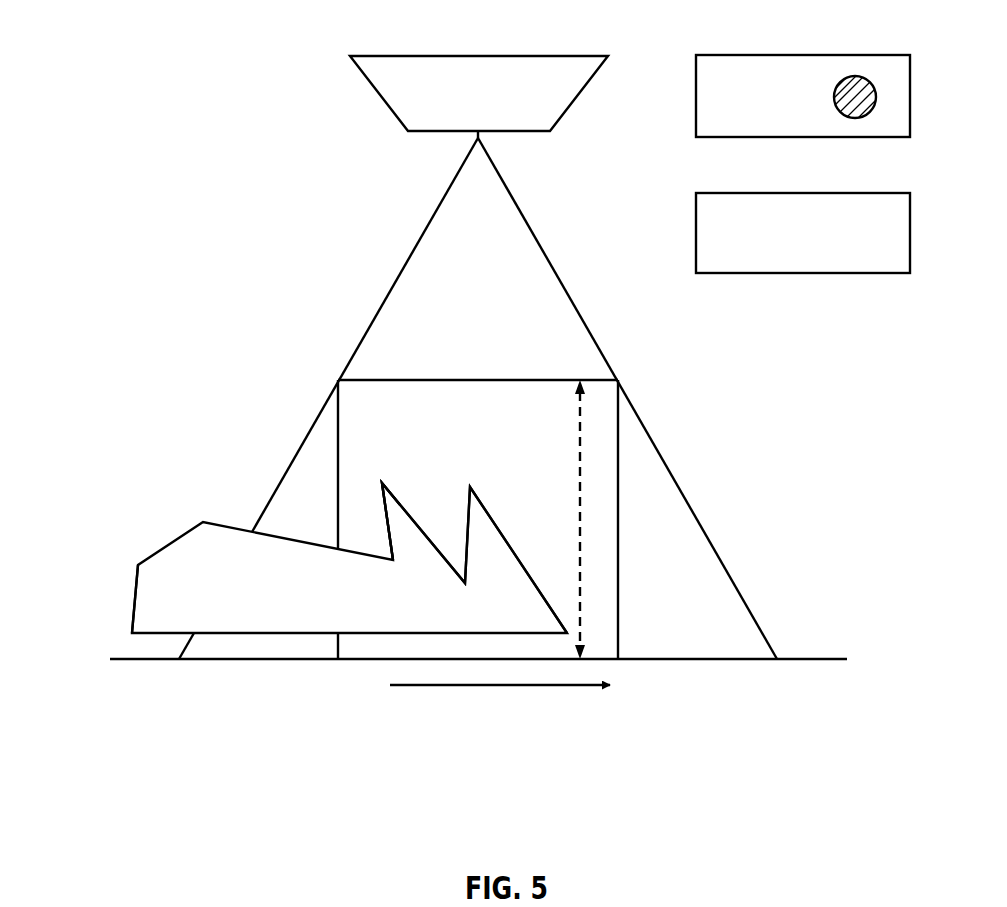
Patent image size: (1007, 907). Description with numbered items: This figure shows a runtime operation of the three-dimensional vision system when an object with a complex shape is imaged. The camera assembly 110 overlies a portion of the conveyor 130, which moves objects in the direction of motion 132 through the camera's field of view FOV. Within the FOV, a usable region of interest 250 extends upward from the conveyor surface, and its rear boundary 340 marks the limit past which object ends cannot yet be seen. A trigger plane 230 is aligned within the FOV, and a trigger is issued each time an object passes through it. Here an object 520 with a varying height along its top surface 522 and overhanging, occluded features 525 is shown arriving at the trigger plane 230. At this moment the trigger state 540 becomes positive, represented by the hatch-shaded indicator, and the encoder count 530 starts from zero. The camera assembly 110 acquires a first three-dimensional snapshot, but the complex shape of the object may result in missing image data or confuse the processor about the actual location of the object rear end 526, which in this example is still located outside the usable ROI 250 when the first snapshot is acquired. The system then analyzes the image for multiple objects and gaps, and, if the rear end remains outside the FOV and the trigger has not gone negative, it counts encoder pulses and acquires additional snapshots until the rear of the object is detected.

The camera assembly 110 is at (533, 63).
The conveyor 130 is at (813, 660).
The direction of motion 132 is at (503, 688).
The trigger plane 230 is at (582, 517).
The usable region of interest 250 is at (628, 450).
The rear boundary of the usable ROI 340 is at (338, 432).
The object 520 is at (288, 602).
The top surface 522 is at (421, 504).
The overhanging features 525 is at (374, 495).
The object rear end 526 is at (120, 617).
The encoder count 530 is at (838, 193).
The trigger state 540 is at (837, 55).
The field of view FOV is at (741, 565).